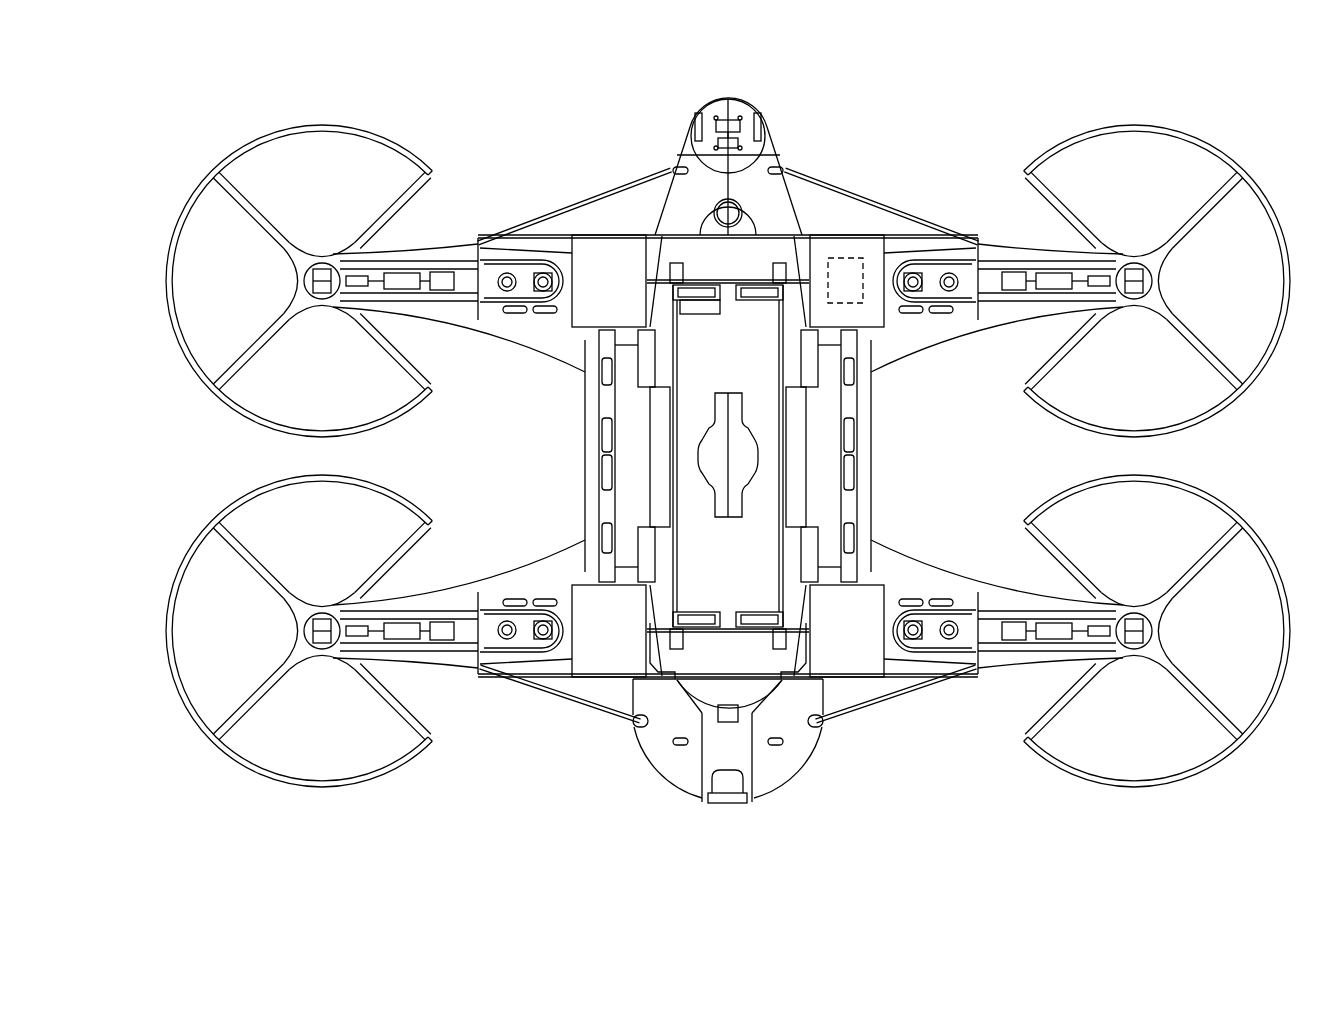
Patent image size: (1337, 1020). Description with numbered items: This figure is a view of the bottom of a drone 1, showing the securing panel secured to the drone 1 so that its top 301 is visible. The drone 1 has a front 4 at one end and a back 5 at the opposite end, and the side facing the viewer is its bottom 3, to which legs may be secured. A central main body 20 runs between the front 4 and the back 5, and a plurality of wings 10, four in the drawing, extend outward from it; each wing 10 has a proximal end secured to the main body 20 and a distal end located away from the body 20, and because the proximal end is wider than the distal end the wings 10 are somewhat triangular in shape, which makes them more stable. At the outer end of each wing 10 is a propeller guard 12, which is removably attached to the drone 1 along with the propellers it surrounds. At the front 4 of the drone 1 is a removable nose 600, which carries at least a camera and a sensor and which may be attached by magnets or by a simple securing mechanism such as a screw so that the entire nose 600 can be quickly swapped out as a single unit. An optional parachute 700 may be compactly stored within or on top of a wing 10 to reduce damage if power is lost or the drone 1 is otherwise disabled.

The drone 1 is at (1288, 102).
The bottom 3 is at (813, 417).
The front 4 is at (713, 102).
The back 5 is at (777, 797).
The wings 10 is at (628, 205).
The propeller guard 12 is at (1202, 768).
The main body 20 is at (640, 497).
The top of the securing panel 301 is at (703, 313).
The removable nose 600 is at (740, 104).
The parachute 700 is at (851, 273).